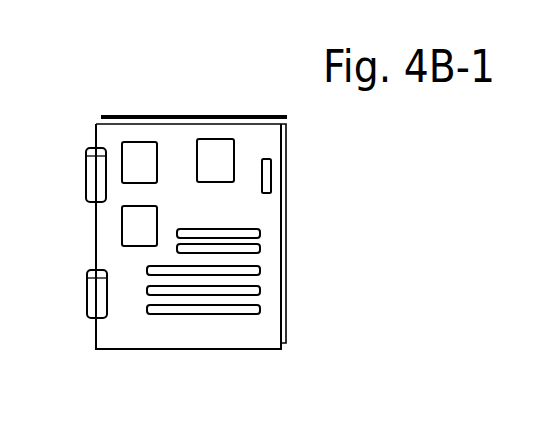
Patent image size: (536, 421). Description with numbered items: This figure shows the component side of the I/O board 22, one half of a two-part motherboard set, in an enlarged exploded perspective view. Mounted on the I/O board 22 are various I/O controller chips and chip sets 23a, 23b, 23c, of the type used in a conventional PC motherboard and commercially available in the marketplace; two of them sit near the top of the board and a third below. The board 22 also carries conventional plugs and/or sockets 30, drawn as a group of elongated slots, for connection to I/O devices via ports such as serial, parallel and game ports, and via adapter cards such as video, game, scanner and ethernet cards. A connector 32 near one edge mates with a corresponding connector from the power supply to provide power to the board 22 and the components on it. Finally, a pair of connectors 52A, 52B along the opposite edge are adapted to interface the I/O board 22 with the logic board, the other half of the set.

The I/O board 22 is at (268, 113).
The I/O controller chip 23a is at (141, 154).
The I/O controller chip 23b is at (223, 155).
The I/O controller chip 23c is at (142, 250).
The plugs and/or sockets 30 is at (265, 265).
The connector 32 is at (262, 169).
The connector 52A is at (95, 190).
The connector 52B is at (92, 307).